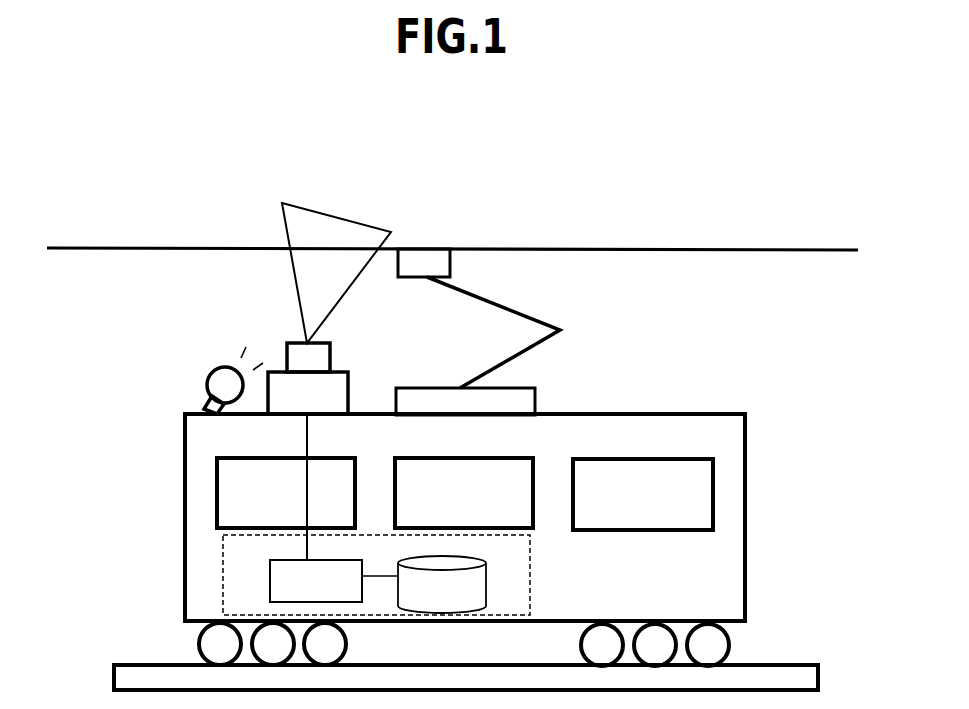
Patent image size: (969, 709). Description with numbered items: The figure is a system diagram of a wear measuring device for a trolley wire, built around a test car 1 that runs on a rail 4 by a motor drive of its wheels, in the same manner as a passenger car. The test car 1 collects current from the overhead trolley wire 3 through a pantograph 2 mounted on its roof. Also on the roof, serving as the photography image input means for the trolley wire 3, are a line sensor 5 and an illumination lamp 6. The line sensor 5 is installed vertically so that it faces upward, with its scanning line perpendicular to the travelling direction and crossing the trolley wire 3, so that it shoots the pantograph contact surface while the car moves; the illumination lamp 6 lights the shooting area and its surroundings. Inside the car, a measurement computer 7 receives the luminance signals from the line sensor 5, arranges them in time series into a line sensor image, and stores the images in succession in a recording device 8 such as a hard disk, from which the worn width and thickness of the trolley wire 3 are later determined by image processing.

The test car 1 is at (746, 488).
The pantograph 2 is at (523, 313).
The trolley wire 3 is at (627, 248).
The rail 4 is at (760, 667).
The line sensor 5 is at (362, 369).
The illumination lamp 6 is at (215, 370).
The measurement computer 7 is at (270, 580).
The recording device 8 is at (487, 580).